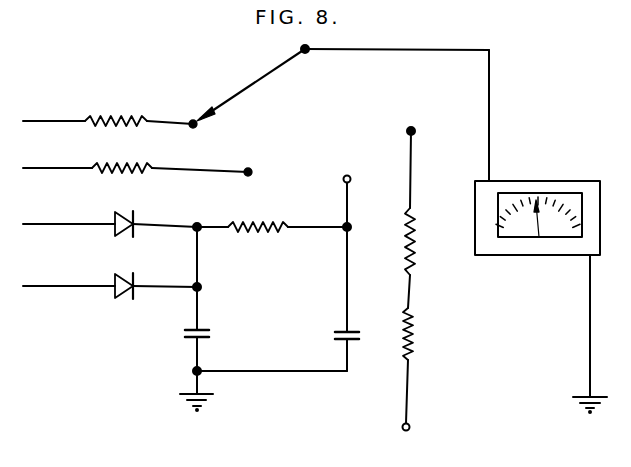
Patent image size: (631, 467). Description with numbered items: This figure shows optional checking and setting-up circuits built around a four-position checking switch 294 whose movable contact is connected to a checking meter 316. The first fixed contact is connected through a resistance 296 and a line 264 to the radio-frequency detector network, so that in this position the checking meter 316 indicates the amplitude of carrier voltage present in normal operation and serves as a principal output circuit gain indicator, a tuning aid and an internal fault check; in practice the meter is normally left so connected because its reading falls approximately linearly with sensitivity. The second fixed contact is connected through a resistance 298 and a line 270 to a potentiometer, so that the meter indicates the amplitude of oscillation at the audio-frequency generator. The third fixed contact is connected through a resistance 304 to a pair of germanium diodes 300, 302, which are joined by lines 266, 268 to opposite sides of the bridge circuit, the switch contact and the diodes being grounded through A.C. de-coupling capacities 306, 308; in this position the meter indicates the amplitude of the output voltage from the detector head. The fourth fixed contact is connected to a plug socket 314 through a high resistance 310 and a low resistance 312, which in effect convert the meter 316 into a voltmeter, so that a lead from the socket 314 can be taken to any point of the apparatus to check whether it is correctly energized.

The line 264 is at (57, 122).
The line 270 is at (62, 170).
The line 266 is at (64, 226).
The line 268 is at (64, 288).
The checking switch 294 is at (249, 89).
The resistance 296 is at (117, 104).
The resistance 298 is at (172, 158).
The germanium diode 300 is at (122, 229).
The germanium diode 302 is at (122, 291).
The resistance 304 is at (247, 238).
The A.C. de-coupling capacity 306 is at (335, 334).
The A.C. de-coupling capacity 308 is at (210, 333).
The high resistance 310 is at (414, 262).
The low resistance 312 is at (413, 334).
The plug socket 314 is at (410, 425).
The checking meter 316 is at (553, 255).